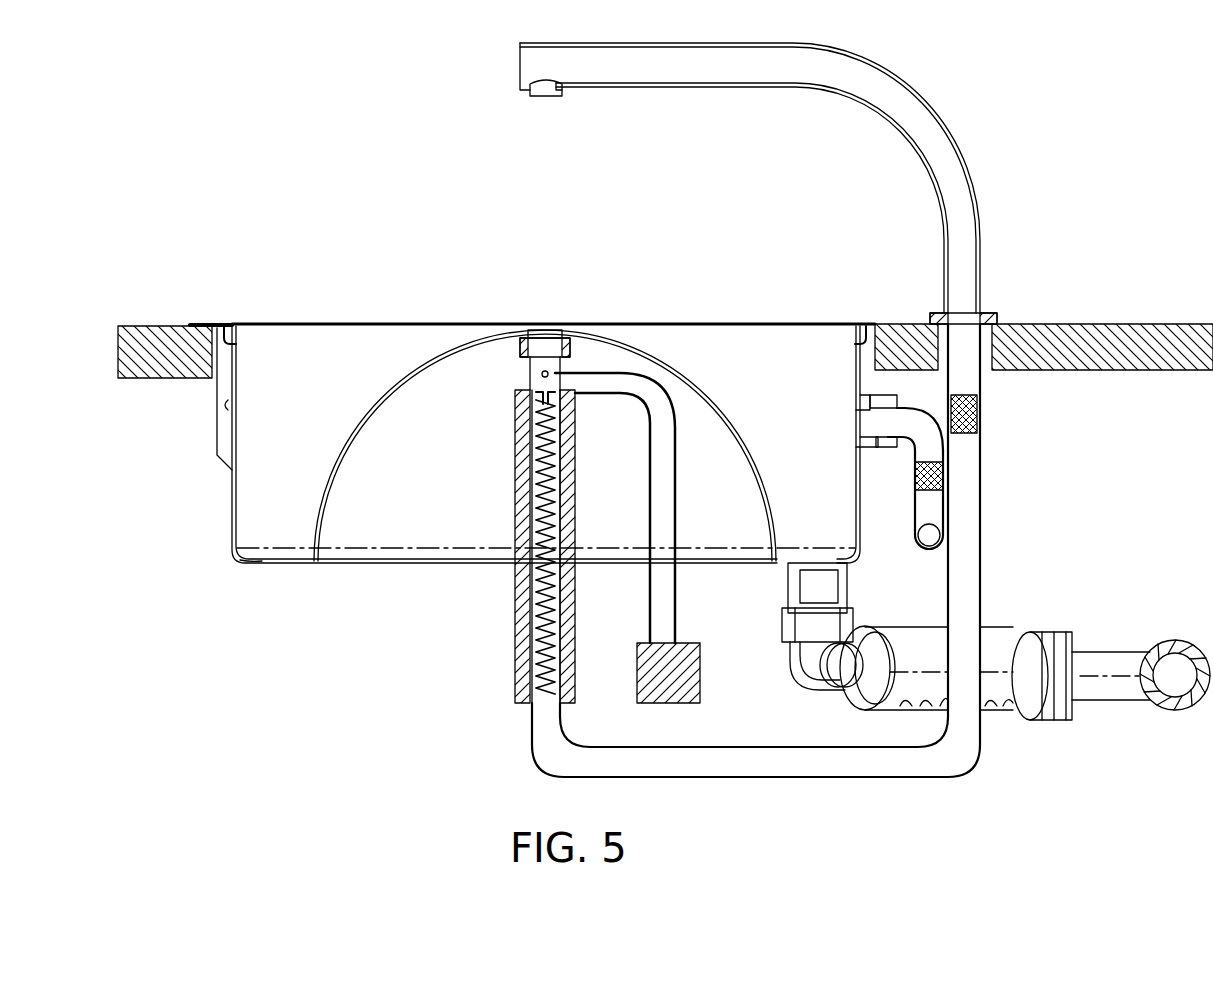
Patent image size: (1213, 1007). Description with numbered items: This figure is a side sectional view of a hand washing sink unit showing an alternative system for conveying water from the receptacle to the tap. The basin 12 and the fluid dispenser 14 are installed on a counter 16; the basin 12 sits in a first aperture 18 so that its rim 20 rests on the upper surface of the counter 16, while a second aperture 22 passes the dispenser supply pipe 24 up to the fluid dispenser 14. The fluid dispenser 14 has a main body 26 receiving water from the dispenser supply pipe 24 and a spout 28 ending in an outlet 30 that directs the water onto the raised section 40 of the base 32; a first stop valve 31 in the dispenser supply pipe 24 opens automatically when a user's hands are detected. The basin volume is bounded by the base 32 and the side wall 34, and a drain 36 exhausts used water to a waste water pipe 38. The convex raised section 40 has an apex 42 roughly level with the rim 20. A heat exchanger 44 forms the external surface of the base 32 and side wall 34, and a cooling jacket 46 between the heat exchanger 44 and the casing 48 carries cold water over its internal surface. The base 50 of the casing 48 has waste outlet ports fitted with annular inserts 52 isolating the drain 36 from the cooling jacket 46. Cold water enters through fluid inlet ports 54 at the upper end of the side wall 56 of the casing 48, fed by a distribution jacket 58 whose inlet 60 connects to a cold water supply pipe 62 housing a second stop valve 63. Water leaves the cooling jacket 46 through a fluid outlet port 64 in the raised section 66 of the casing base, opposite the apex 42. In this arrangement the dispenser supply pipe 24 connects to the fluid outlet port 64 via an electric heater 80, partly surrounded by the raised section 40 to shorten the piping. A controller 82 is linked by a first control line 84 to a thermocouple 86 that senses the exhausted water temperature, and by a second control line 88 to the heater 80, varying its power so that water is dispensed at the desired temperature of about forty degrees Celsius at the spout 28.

The basin 12 is at (462, 322).
The fluid dispenser 14 is at (986, 242).
The counter 16 is at (134, 345).
The first aperture 18 is at (210, 380).
The rim 20 is at (200, 322).
The second aperture 22 is at (1005, 372).
The dispenser supply pipe 24 is at (984, 585).
The main body 26 is at (964, 148).
The spout 28 is at (565, 94).
The outlet 30 is at (535, 98).
The first stop valve 31 is at (978, 418).
The base 32 is at (254, 568).
The side wall 34 is at (386, 338).
The drain 36 is at (790, 562).
The waste water pipe 38 is at (906, 636).
The raised section 40 is at (660, 330).
The apex 42 is at (546, 334).
The heat exchanger 44 is at (732, 400).
The cooling jacket 46 is at (370, 428).
The casing 48 is at (232, 514).
The base of the casing 50 is at (285, 566).
The annular inserts 52 is at (826, 562).
The fluid inlet ports 54 is at (230, 340).
The side wall of the casing 56 is at (230, 404).
The distribution jacket 58 is at (856, 382).
The inlet 60 is at (880, 452).
The cold water supply pipe 62 is at (928, 546).
The second stop valve 63 is at (944, 476).
The fluid outlet port 64 is at (556, 342).
The raised section of the base of the casing 66 is at (430, 378).
The electric heater 80 is at (516, 506).
The controller 82 is at (702, 670).
The first control line 84 is at (678, 448).
The thermocouple 86 is at (540, 375).
The second control line 88 is at (648, 504).